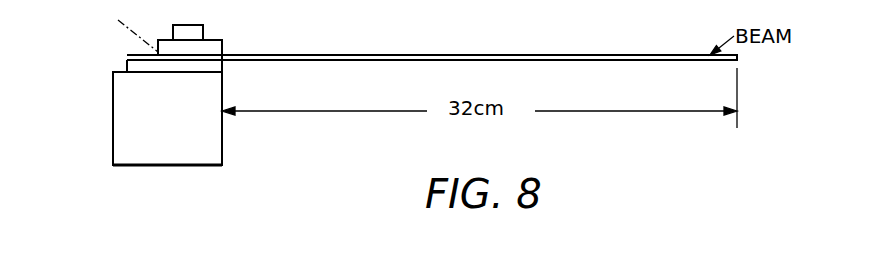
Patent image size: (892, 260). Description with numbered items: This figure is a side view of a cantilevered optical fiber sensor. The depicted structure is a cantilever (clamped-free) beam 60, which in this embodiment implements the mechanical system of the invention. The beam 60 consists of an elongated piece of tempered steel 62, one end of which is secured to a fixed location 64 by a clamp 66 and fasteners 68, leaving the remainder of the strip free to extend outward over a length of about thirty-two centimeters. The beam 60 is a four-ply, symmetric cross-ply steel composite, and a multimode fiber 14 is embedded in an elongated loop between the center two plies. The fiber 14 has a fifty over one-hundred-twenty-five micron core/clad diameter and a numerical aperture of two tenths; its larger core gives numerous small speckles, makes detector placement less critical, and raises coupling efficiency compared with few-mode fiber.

The multimode fiber 14 is at (128, 32).
The cantilever beam 60 is at (432, 42).
The elongated piece of tempered steel 62 is at (574, 55).
The fixed location 64 is at (167, 166).
The clamp 66 is at (222, 47).
The fasteners 68 is at (203, 27).